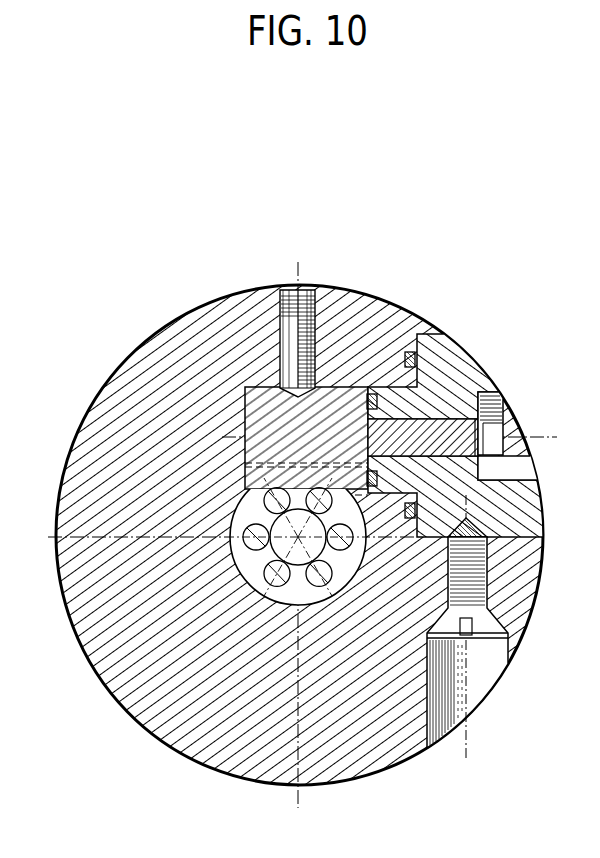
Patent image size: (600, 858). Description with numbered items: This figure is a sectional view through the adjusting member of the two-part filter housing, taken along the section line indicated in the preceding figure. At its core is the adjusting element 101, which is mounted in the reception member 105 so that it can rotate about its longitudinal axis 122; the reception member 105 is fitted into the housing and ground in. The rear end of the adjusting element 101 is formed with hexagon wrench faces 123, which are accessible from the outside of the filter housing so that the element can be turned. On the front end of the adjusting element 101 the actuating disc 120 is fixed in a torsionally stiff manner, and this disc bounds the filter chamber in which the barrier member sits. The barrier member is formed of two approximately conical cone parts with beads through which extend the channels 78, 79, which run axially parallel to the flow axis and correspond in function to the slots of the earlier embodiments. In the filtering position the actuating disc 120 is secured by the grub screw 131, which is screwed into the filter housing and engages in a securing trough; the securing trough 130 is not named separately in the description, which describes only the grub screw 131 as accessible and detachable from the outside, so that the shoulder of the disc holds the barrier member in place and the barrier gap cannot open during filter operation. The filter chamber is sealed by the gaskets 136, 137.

The channel 78 is at (197, 648).
The channel 79 is at (282, 585).
The adjusting element 101 is at (445, 428).
The reception member 105 is at (455, 372).
The actuating disc 120 is at (262, 417).
The longitudinal axis 122 is at (240, 447).
The hexagon wrench faces 123 is at (492, 438).
The threaded bore 130 is at (278, 395).
The grub screw 131 is at (302, 344).
The gasket 136 is at (410, 357).
The gasket 137 is at (370, 390).